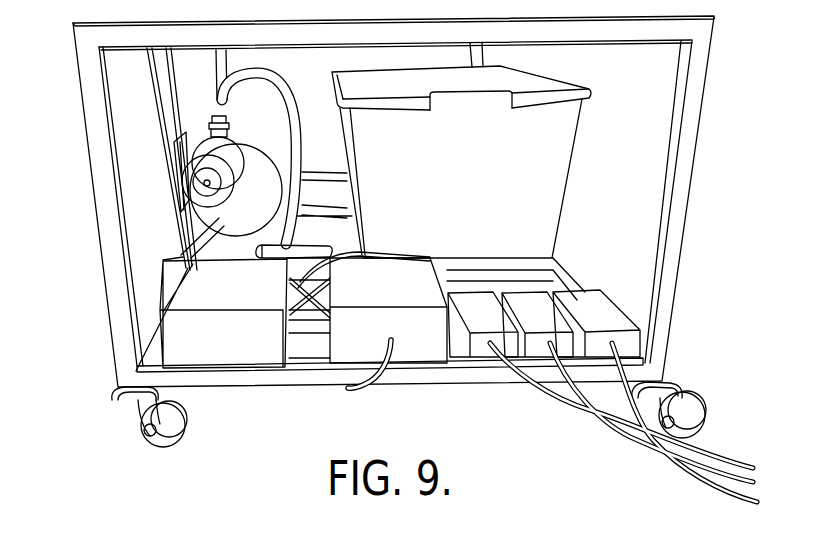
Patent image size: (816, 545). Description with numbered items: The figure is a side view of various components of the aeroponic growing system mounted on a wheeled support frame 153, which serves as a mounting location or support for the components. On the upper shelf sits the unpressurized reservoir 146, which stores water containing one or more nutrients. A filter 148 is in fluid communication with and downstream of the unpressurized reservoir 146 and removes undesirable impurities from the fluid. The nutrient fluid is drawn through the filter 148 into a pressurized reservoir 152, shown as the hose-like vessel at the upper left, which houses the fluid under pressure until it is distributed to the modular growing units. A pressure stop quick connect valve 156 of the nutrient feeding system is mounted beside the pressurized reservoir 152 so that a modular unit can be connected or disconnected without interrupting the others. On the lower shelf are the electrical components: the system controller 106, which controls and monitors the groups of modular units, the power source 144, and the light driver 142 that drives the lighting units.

The system controller 106 is at (185, 262).
The light driver 142 is at (532, 304).
The power source 144 is at (407, 268).
The unpressurized reservoir 146 is at (557, 142).
The filter 148 is at (300, 250).
The pressurized reservoir 152 is at (207, 110).
The support frame 153 is at (117, 306).
The pressure stop quick connect valve 156 is at (202, 165).